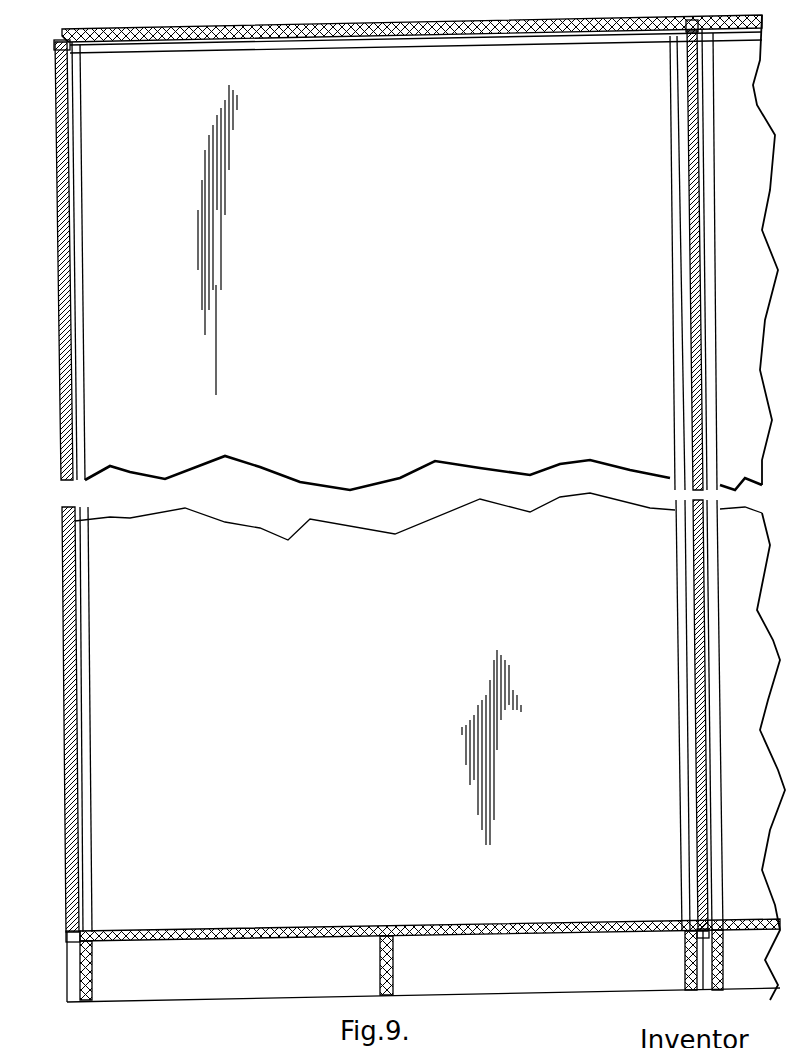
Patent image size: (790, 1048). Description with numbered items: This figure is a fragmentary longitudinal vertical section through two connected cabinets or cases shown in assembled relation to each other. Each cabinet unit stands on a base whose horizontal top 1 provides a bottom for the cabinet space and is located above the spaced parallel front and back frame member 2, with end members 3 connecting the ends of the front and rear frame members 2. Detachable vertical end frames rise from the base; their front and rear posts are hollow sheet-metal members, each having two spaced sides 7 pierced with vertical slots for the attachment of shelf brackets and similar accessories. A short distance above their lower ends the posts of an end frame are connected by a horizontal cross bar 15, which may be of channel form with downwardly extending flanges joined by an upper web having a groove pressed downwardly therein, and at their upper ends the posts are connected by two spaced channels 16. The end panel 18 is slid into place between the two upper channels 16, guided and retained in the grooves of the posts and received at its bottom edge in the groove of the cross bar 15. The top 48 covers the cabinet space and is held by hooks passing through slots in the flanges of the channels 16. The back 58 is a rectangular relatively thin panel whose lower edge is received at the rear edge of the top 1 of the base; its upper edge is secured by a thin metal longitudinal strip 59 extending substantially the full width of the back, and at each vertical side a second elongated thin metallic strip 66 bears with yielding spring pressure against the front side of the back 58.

The horizontal top 1 is at (367, 897).
The front and back frame member 2 is at (200, 990).
The end members 3 is at (90, 970).
The sides 7 is at (58, 456).
The horizontal cross bar 15 is at (67, 936).
The channels 16 is at (55, 44).
The end panel 18 is at (66, 366).
The top 48 is at (467, 30).
The back 58 is at (127, 450).
The thin metal longitudinal strip 59 is at (373, 43).
The second elongated thin metallic strip 66 is at (82, 190).